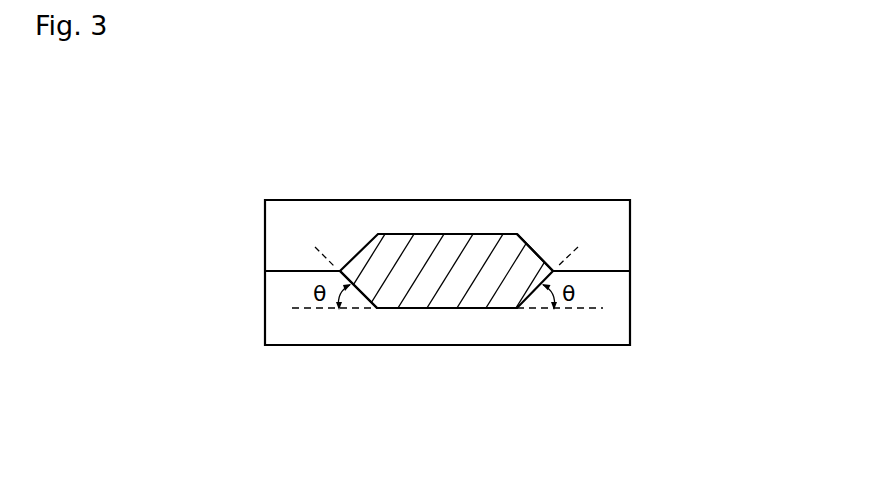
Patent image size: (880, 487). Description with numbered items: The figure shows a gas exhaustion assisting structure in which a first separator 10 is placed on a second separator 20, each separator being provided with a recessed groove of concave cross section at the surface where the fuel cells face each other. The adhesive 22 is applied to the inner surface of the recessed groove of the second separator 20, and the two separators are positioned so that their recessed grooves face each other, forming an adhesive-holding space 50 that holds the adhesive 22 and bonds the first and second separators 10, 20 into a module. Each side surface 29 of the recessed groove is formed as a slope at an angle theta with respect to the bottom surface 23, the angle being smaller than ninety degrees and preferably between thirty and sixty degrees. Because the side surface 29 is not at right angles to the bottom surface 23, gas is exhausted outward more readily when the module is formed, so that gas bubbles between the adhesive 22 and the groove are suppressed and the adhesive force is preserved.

The first separator 10 is at (602, 222).
The second separator 20 is at (612, 320).
The adhesive-holding space 50 is at (455, 236).
The side surface 29 is at (553, 274).
The adhesive 22 is at (432, 288).
The bottom surface 23 is at (478, 308).